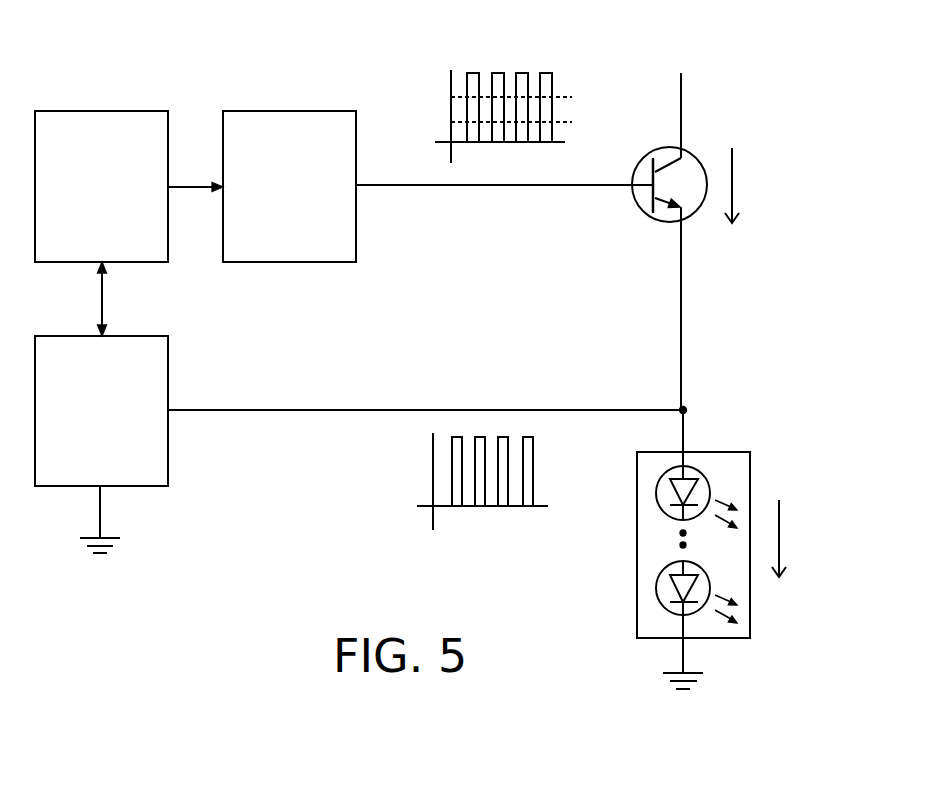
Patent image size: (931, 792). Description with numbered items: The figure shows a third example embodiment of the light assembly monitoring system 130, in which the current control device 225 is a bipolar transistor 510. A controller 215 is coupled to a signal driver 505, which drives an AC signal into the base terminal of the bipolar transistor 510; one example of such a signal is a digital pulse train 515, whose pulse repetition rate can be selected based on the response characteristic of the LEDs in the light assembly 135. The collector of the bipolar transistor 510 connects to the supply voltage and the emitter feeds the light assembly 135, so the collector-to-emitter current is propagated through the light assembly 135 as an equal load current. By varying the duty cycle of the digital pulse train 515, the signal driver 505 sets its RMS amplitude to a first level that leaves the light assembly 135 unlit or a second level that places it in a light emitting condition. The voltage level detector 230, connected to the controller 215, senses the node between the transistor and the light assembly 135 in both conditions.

The light assembly monitoring system 130 is at (269, 515).
The light assembly 135 is at (777, 462).
The controller 215 is at (122, 142).
The current control device 225 is at (701, 228).
The voltage level detector 230 is at (121, 362).
The signal driver 505 is at (309, 142).
The bipolar transistor 510 is at (642, 212).
The digital pulse train 515 is at (525, 54).